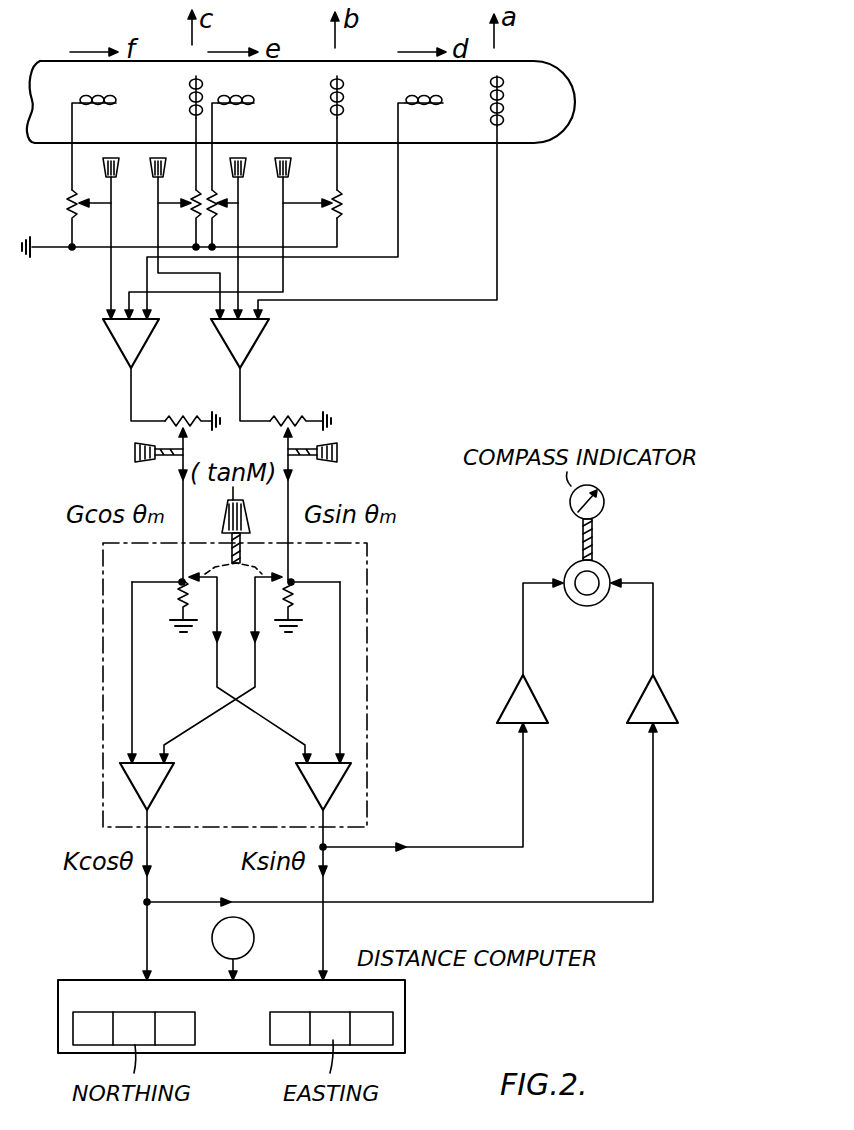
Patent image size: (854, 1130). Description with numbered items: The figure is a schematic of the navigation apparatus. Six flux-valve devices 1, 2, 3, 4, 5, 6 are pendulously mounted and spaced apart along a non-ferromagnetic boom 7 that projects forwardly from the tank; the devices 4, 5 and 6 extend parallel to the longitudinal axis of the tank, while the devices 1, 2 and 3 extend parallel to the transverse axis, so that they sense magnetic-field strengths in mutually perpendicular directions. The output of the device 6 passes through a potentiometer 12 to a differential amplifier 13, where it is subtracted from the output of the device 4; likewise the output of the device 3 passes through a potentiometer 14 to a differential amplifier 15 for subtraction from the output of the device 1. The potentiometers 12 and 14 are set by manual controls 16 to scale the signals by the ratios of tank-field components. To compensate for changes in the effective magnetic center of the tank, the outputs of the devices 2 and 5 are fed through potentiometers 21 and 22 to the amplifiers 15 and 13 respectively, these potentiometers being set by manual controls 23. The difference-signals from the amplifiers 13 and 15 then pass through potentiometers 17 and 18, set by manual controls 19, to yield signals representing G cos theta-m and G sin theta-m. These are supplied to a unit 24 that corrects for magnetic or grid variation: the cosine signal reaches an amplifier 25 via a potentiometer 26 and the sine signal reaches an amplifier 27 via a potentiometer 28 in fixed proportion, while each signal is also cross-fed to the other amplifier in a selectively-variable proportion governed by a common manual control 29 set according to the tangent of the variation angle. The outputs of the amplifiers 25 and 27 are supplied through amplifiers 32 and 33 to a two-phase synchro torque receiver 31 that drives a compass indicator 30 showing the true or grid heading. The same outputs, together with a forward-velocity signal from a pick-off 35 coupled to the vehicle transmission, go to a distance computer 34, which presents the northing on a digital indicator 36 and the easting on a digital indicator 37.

The flux-valve device 1 is at (493, 80).
The flux-valve device 2 is at (330, 80).
The flux-valve device 3 is at (188, 100).
The flux-valve device 4 is at (407, 95).
The flux-valve device 5 is at (247, 97).
The flux-valve device 6 is at (110, 98).
The non-ferromagnetic boom 7 is at (545, 72).
The potentiometer 12 is at (70, 195).
The differential amplifier 13 is at (123, 343).
The potentiometer 14 is at (194, 226).
The differential amplifier 15 is at (257, 337).
The manual controls 16 is at (158, 178).
The potentiometer 17 is at (173, 417).
The potentiometer 18 is at (288, 417).
The manual controls 19 is at (133, 455).
The potentiometer 21 is at (337, 198).
The potentiometer 22 is at (214, 213).
The manual controls 23 is at (283, 178).
The unit 24 is at (368, 660).
The amplifier 25 is at (157, 777).
The potentiometer 26 is at (178, 572).
The amplifier 27 is at (313, 778).
The potentiometer 28 is at (293, 572).
The common manual control 29 is at (237, 567).
The compass indicator 30 is at (600, 498).
The two-phase synchro torque receiver 31 is at (591, 601).
The amplifier 32 is at (643, 713).
The amplifier 33 is at (537, 720).
The distance computer 34 is at (392, 1000).
The pick-off 35 is at (245, 938).
The digital indicator 36 is at (180, 1020).
The digital indicator 37 is at (285, 1020).